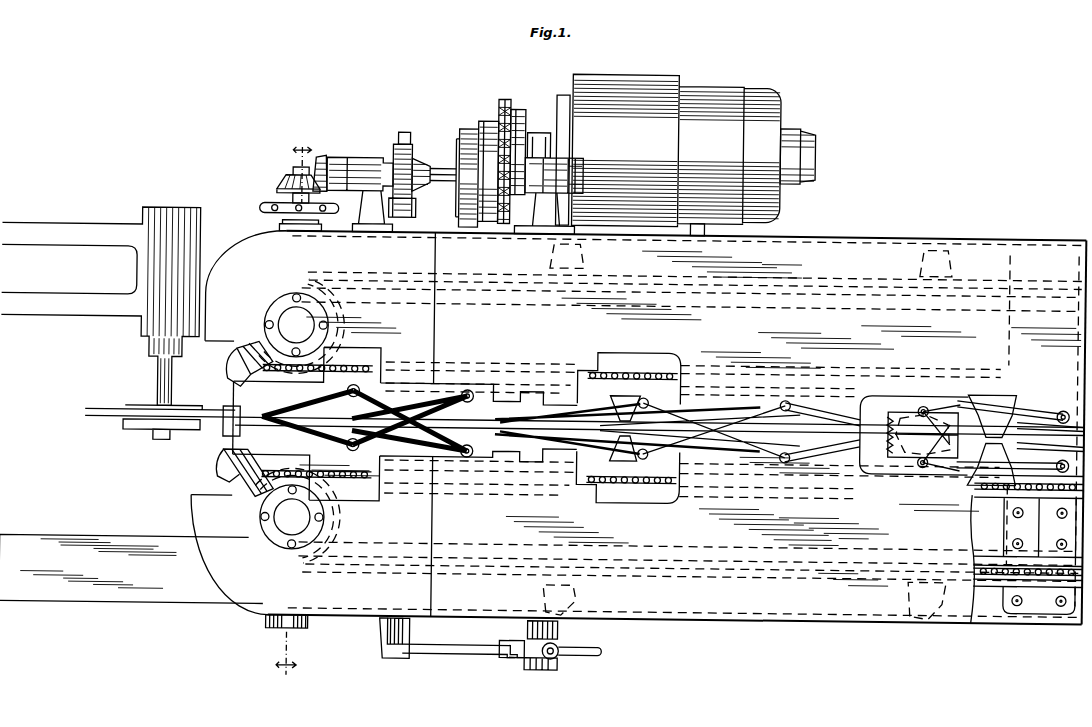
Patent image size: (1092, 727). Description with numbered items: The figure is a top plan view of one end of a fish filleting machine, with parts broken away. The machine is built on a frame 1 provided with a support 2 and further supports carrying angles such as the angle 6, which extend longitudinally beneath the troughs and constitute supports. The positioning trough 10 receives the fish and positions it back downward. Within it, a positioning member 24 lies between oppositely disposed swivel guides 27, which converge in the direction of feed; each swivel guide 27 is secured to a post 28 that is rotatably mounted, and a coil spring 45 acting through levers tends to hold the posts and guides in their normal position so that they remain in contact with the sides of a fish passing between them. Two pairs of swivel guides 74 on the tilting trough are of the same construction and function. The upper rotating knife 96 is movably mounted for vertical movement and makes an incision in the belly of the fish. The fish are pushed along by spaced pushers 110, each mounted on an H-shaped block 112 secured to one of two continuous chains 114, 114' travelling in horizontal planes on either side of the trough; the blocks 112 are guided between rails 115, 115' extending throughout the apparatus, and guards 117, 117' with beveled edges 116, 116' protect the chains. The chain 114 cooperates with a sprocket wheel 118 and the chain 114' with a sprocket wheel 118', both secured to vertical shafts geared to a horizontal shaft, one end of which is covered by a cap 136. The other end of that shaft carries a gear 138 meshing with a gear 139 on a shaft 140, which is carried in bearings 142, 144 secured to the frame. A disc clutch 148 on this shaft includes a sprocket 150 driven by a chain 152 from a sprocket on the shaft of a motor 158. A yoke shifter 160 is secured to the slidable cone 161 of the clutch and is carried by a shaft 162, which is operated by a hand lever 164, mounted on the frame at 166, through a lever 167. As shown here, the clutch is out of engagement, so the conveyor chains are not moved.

The frame 1 is at (131, 600).
The support 2 is at (1010, 518).
The angle 6 is at (294, 408).
The positioning trough 10 is at (545, 400).
The positioning member 24 is at (790, 402).
The swivel guide 27 is at (745, 404).
The post 28 is at (925, 402).
The coil spring 45 is at (887, 432).
The swivel guides 74 is at (330, 445).
The upper rotating knife 96 is at (105, 421).
The pusher 110 is at (570, 258).
The H-shaped block 112 is at (240, 348).
The continuous chain 114 is at (474, 352).
The continuous chain 114' is at (469, 497).
The rail 115 is at (477, 371).
The rail 115' is at (478, 458).
The beveled edge 116 is at (836, 387).
The beveled edge 116' is at (825, 479).
The guard 117 is at (646, 281).
The guard 117' is at (636, 577).
The sprocket wheel 118 is at (319, 326).
The sprocket wheel 118' is at (312, 516).
The cap 136 is at (275, 631).
The gear 138 is at (278, 181).
The gear 139 is at (318, 157).
The shaft 140 is at (445, 182).
The bearing 142 is at (358, 160).
The bearing 144 is at (568, 168).
The disc clutch 148 is at (468, 126).
The sprocket 150 is at (521, 132).
The chain 152 is at (502, 115).
The motor 158 is at (722, 76).
The yoke shifter 160 is at (400, 134).
The slidable cone 161 is at (418, 158).
The shaft 162 is at (397, 660).
The hand lever 164 is at (590, 658).
The mounting 166 is at (562, 632).
The lever 167 is at (472, 652).